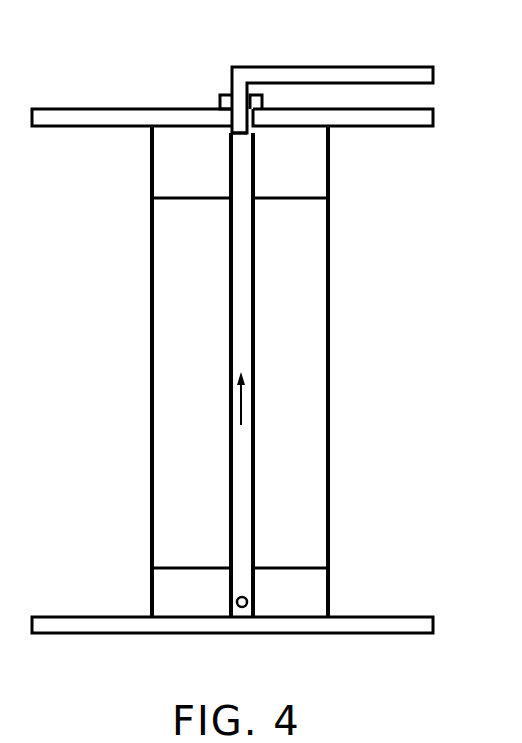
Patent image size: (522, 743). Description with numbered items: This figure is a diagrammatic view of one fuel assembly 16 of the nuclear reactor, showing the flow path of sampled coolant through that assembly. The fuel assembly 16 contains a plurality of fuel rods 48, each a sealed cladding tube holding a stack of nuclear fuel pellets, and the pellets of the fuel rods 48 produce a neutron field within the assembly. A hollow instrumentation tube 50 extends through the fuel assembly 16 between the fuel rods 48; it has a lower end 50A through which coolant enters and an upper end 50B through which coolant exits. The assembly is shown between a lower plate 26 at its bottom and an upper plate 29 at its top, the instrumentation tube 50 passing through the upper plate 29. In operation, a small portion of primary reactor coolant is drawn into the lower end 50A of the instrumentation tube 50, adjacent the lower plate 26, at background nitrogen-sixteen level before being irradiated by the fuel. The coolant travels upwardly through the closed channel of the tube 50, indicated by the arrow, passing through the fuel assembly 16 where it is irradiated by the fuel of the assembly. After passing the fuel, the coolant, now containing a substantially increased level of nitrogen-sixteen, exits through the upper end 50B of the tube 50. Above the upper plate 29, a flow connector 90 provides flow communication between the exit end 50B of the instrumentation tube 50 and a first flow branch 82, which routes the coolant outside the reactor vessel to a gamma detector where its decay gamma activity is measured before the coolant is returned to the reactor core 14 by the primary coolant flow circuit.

The reactor core 14 is at (272, 405).
The fuel assembly 16 is at (328, 296).
The bottom plate 26 is at (112, 634).
The top plate 29 is at (113, 108).
The fuel rods 48 is at (310, 382).
The instrumentation tube 50 is at (243, 455).
The lower end of instrumentation tube 50A is at (242, 610).
The upper end of instrumentation tube 50B is at (237, 143).
The first flow branch 82 is at (283, 67).
The flow connector 90 is at (228, 94).